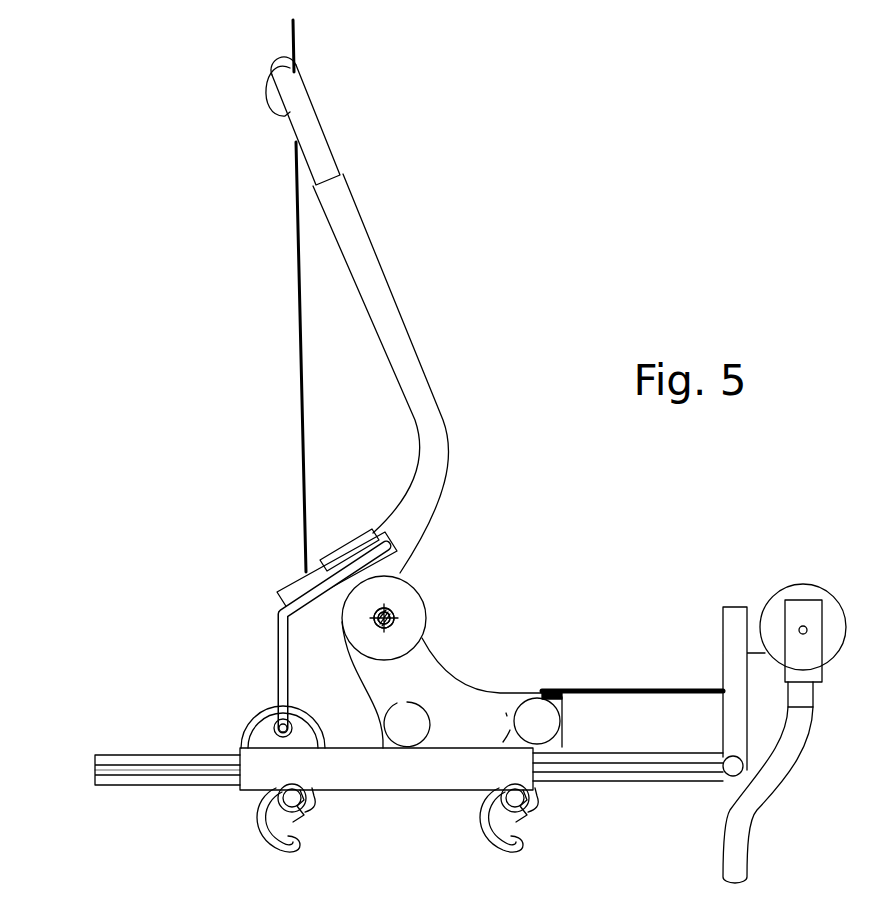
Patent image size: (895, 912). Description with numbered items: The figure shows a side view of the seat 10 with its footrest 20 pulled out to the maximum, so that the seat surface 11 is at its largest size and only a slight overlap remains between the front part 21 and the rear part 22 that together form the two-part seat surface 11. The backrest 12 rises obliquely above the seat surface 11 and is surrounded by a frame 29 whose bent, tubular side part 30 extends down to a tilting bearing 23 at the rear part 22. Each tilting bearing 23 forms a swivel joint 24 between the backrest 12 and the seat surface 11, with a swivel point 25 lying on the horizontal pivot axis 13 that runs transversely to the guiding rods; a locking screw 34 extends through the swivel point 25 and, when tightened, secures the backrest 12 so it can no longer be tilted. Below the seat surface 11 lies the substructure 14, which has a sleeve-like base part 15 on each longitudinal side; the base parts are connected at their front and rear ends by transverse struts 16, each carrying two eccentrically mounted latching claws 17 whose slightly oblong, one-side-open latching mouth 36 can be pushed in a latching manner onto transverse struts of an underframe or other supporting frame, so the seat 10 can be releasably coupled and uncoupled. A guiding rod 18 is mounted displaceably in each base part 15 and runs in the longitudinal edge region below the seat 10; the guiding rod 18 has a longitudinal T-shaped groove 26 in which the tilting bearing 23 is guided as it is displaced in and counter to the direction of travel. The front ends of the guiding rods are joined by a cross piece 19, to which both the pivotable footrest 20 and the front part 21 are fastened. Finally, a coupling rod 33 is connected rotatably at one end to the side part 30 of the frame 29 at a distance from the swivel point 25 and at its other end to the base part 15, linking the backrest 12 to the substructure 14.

The seat 10 is at (532, 555).
The seat surface 11 is at (604, 690).
The backrest 12 is at (296, 374).
The horizontal pivot axis 13 is at (395, 610).
The substructure 14 is at (223, 798).
The base part 15 is at (253, 758).
The transverse strut 16 is at (487, 800).
The latching claw 17 is at (480, 822).
The guiding rod 18 is at (115, 755).
The cross piece 19 is at (737, 775).
The footrest 20 is at (792, 765).
The front part 21 is at (670, 690).
The rear part 22 is at (555, 692).
The tilting bearing 23 is at (457, 693).
The swivel joint 24 is at (425, 628).
The swivel point 25 is at (384, 618).
The groove 26 is at (120, 773).
The frame 29 is at (313, 160).
The side part 30 is at (380, 312).
The coupling rod 33 is at (277, 645).
The locking screw 34 is at (383, 612).
The latching mouth 36 is at (512, 825).